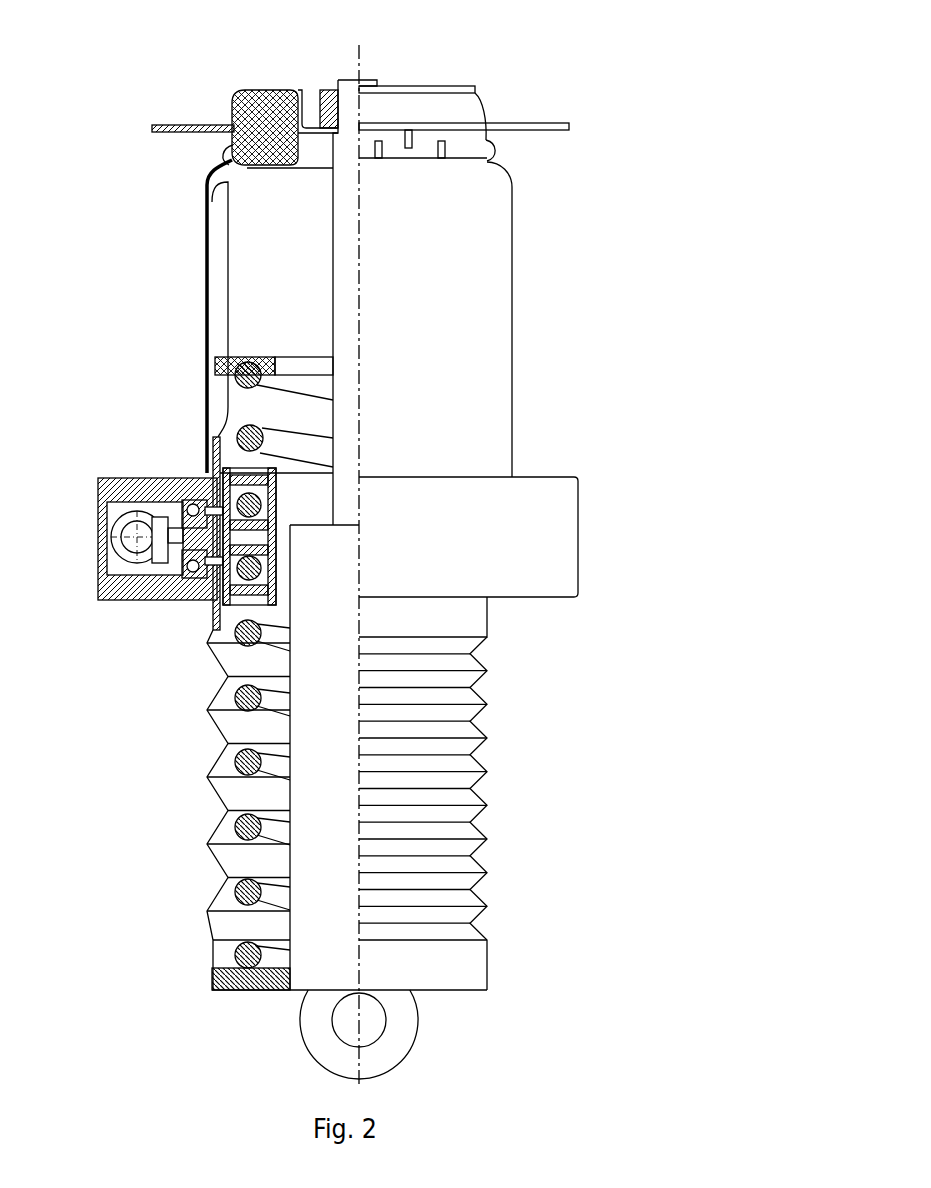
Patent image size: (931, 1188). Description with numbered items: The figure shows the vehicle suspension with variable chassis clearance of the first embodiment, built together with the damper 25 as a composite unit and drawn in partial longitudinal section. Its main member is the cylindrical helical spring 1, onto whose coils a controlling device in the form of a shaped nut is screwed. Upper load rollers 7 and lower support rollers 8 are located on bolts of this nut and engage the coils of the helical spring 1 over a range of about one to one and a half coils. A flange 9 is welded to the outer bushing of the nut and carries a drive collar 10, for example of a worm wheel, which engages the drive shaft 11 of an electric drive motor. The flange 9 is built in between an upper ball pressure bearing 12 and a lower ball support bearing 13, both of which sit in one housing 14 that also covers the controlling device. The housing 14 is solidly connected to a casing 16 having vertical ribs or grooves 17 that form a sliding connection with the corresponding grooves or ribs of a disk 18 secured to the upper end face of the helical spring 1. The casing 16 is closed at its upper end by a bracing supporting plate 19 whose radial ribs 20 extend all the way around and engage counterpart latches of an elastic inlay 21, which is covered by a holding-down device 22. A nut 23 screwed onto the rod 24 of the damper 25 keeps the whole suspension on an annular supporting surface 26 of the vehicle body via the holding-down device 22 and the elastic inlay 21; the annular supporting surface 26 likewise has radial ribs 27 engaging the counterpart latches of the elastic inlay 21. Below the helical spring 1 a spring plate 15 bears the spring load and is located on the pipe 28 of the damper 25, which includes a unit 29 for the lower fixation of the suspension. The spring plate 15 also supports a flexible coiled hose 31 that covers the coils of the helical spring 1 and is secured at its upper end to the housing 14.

The cylindrical helical spring 1 is at (243, 768).
The upper load rollers 7 is at (211, 452).
The lower support rollers 8 is at (235, 605).
The flange 9 is at (183, 590).
The drive collar 10 is at (127, 478).
The drive shaft 11 is at (140, 547).
The upper ball pressure bearing 12 is at (163, 514).
The lower ball support bearing 13 is at (184, 598).
The housing 14 is at (550, 523).
The spring plate 15 is at (233, 990).
The casing 16 is at (478, 360).
The vertical ribs or grooves 17 is at (222, 270).
The disk 18 is at (212, 367).
The bracing supporting plate 19 is at (317, 160).
The radial ribs 20 is at (480, 152).
The elastic inlay 21 is at (240, 92).
The holding-down device 22 is at (410, 88).
The nut 23 is at (320, 88).
The rod 24 is at (347, 335).
The damper 25 is at (335, 522).
The annular supporting surface 26 is at (553, 122).
The radial ribs 27 is at (412, 138).
The pipe 28 is at (332, 968).
The unit for lower fixation 29 is at (403, 1015).
The flexible coiled hose 31 is at (467, 802).